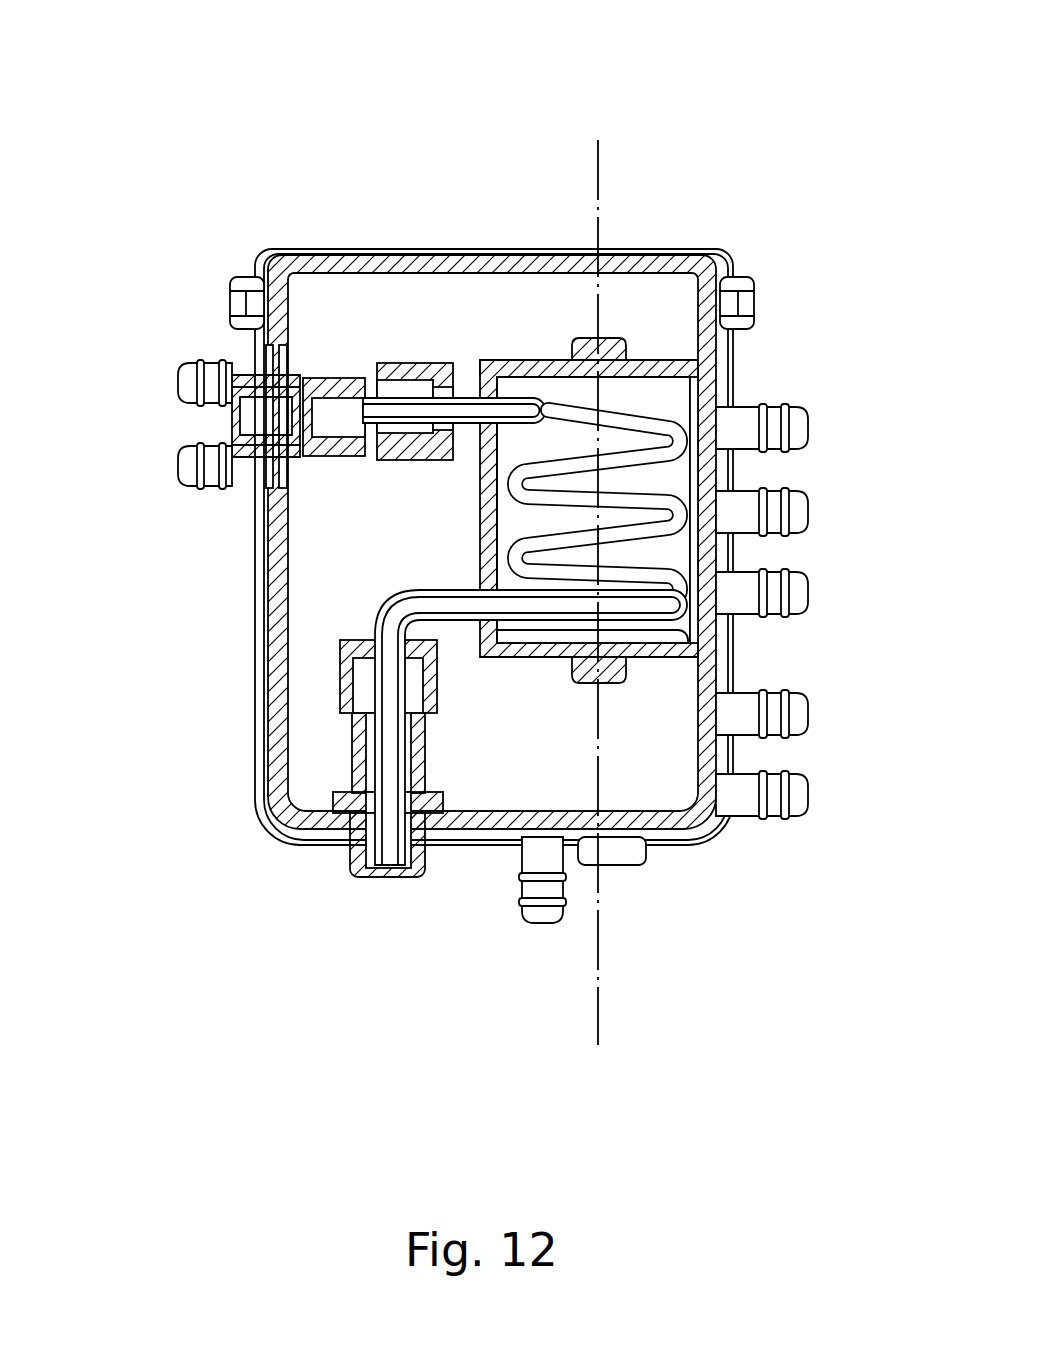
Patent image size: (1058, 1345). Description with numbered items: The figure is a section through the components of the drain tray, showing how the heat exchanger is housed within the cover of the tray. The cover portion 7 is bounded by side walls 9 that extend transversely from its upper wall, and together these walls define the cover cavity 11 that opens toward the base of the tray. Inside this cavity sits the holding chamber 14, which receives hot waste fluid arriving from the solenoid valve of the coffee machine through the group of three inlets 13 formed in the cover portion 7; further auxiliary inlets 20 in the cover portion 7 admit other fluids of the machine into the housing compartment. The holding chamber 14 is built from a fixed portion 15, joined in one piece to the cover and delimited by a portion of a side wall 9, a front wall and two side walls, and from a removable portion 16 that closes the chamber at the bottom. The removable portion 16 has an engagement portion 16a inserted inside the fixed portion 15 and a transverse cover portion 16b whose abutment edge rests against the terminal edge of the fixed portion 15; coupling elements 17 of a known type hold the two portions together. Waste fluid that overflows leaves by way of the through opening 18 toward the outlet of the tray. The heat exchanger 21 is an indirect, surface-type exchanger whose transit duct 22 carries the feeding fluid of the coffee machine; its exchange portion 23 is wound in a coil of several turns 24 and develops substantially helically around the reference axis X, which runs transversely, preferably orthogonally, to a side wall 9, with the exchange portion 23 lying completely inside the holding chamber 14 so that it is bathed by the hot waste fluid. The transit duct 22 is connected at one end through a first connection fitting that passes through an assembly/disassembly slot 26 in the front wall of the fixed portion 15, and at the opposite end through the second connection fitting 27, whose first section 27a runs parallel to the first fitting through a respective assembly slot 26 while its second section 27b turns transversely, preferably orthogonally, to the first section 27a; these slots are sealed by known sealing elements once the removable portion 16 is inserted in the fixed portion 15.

The cover portion 7 is at (742, 254).
The side wall 9 is at (378, 250).
The cover cavity 11 is at (647, 280).
The inlet 13 is at (812, 427).
The holding chamber 14 is at (496, 473).
The fixed portion 15 is at (526, 364).
The removable portion 16 is at (557, 390).
The engagement portion 16a is at (620, 380).
The cover portion 16b is at (732, 368).
The coupling element 17 is at (612, 350).
The through opening 18 is at (498, 509).
The auxiliary inlet 20 is at (178, 468).
The heat exchanger 21 is at (519, 510).
The transit duct 22 is at (520, 366).
The exchange portion 23 is at (677, 468).
The turn 24 is at (519, 527).
The assembly/disassembly slot 26 is at (405, 402).
The second connection fitting 27 is at (392, 811).
The first section 27a is at (520, 606).
The second section 27b is at (388, 668).
The reference axis X is at (597, 1017).